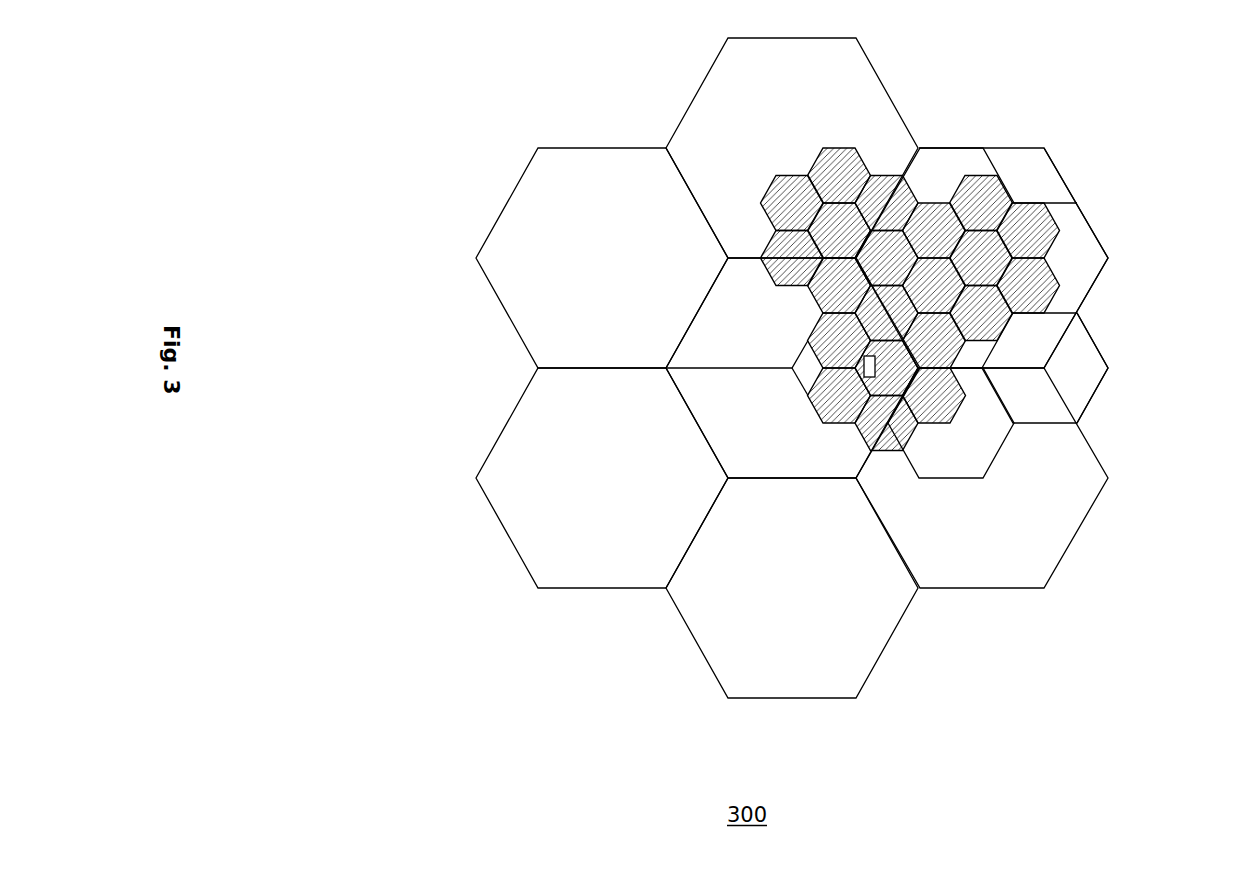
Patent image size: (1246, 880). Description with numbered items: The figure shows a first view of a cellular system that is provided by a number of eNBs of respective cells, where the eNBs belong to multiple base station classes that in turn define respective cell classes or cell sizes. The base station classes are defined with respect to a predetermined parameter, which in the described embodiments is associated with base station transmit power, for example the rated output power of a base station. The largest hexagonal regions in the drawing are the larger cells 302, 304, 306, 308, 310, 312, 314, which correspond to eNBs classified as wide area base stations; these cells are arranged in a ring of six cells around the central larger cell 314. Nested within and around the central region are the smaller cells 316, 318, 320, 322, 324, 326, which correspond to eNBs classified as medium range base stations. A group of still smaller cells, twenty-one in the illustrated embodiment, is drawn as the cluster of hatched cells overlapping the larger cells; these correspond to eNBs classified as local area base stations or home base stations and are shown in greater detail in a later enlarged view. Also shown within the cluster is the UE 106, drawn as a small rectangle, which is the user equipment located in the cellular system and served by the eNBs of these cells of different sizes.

The larger cell 302 is at (727, 692).
The larger cell 304 is at (1000, 588).
The larger cell 306 is at (1051, 156).
The larger cell 308 is at (718, 53).
The larger cell 310 is at (477, 256).
The larger cell 312 is at (476, 478).
The larger cell 314 is at (698, 318).
The smaller cell 316 is at (792, 368).
The smaller cell 318 is at (952, 478).
The smaller cell 320 is at (1110, 367).
The smaller cell 322 is at (1111, 261).
The smaller cell 324 is at (947, 147).
The smaller cell 326 is at (983, 368).
The UE 106 is at (864, 367).